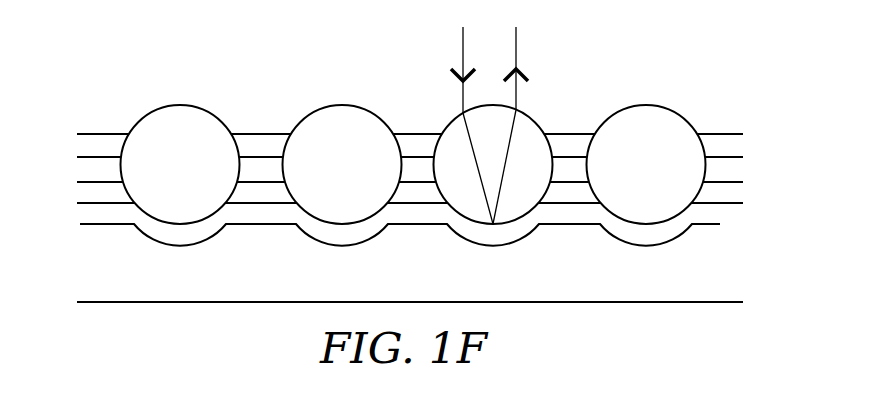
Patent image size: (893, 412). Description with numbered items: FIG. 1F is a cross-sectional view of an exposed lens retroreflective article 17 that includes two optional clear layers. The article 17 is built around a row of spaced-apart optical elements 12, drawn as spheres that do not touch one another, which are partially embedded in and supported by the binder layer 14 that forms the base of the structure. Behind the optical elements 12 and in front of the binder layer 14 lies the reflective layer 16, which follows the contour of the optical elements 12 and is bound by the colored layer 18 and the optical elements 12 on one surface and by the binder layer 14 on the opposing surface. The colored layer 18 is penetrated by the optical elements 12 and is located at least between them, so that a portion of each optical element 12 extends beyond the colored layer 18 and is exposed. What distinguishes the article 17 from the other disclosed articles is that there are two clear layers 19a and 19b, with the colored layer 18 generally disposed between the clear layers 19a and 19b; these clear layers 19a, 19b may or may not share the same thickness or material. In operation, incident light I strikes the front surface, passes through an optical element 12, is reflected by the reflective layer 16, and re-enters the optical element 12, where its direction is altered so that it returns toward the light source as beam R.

The optical elements 12 is at (603, 140).
The binder layer 14 is at (436, 282).
The reflective layer 16 is at (168, 232).
The article 17 is at (152, 66).
The colored layer 18 is at (100, 173).
The clear layer 19a is at (258, 195).
The clear layer 19b is at (102, 140).
The incident light I is at (462, 40).
The beam R is at (517, 40).